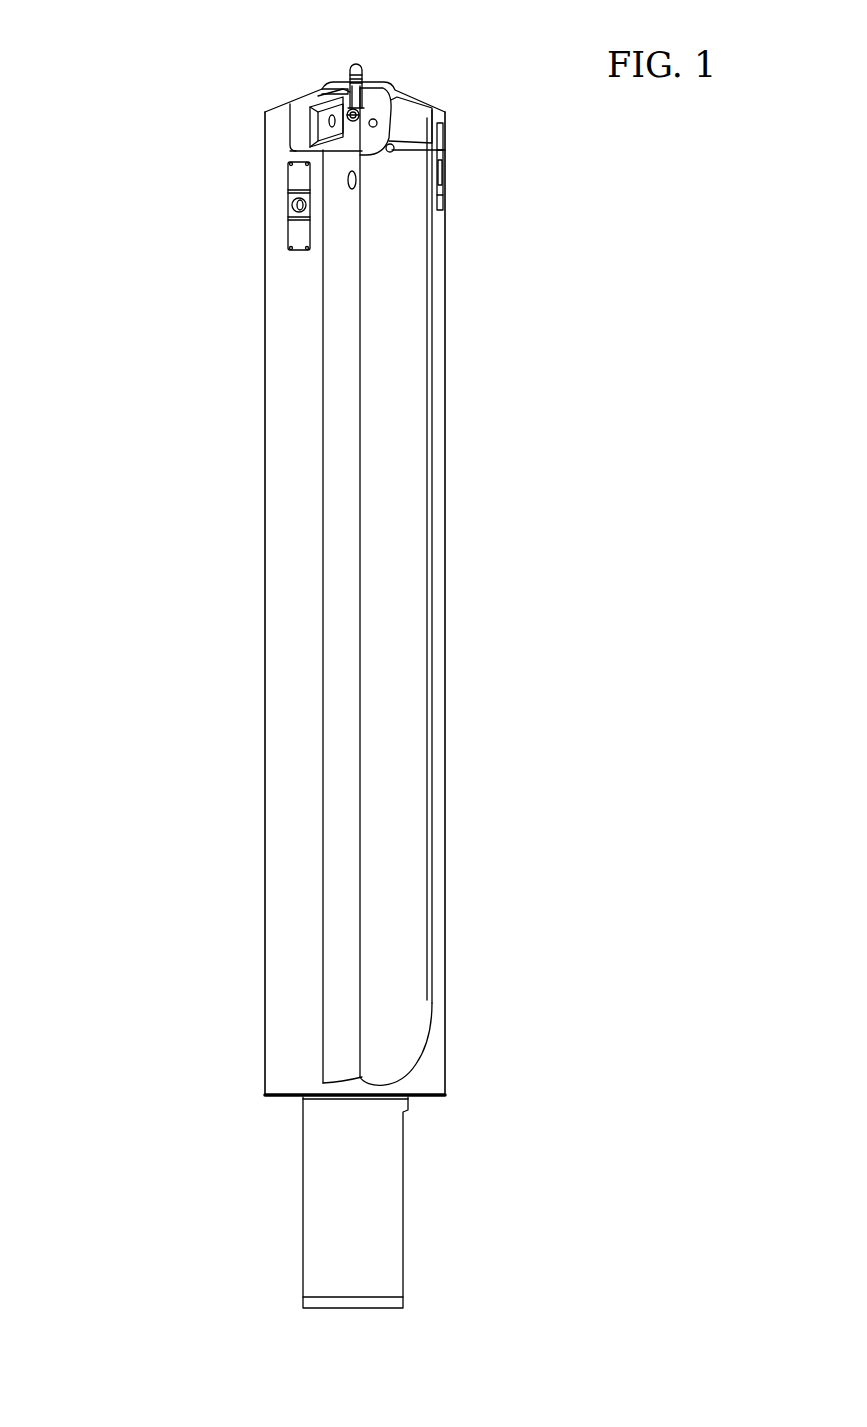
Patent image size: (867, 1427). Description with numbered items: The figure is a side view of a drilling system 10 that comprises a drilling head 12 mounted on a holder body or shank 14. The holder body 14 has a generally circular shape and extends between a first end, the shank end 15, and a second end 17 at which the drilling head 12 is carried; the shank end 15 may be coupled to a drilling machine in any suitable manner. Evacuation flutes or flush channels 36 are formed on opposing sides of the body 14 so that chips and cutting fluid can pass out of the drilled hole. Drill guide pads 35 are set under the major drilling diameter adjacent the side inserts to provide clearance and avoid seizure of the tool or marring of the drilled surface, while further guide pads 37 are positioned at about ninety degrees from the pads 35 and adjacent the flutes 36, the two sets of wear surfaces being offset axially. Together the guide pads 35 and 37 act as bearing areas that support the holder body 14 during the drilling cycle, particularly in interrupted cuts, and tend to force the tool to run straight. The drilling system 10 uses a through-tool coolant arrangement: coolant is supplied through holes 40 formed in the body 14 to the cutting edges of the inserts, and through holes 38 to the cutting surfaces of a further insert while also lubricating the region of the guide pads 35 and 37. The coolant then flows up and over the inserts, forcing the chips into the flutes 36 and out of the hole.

The drilling system 10 is at (102, 215).
The drilling head 12 is at (295, 118).
The holder body 14 is at (273, 403).
The shank end 15 is at (403, 1218).
The second end 17 is at (258, 50).
The drill guide pads 35 is at (293, 233).
The flush channels 36 is at (403, 535).
The guide pads 37 is at (443, 200).
The holes 38 is at (394, 148).
The holes 40 is at (360, 185).